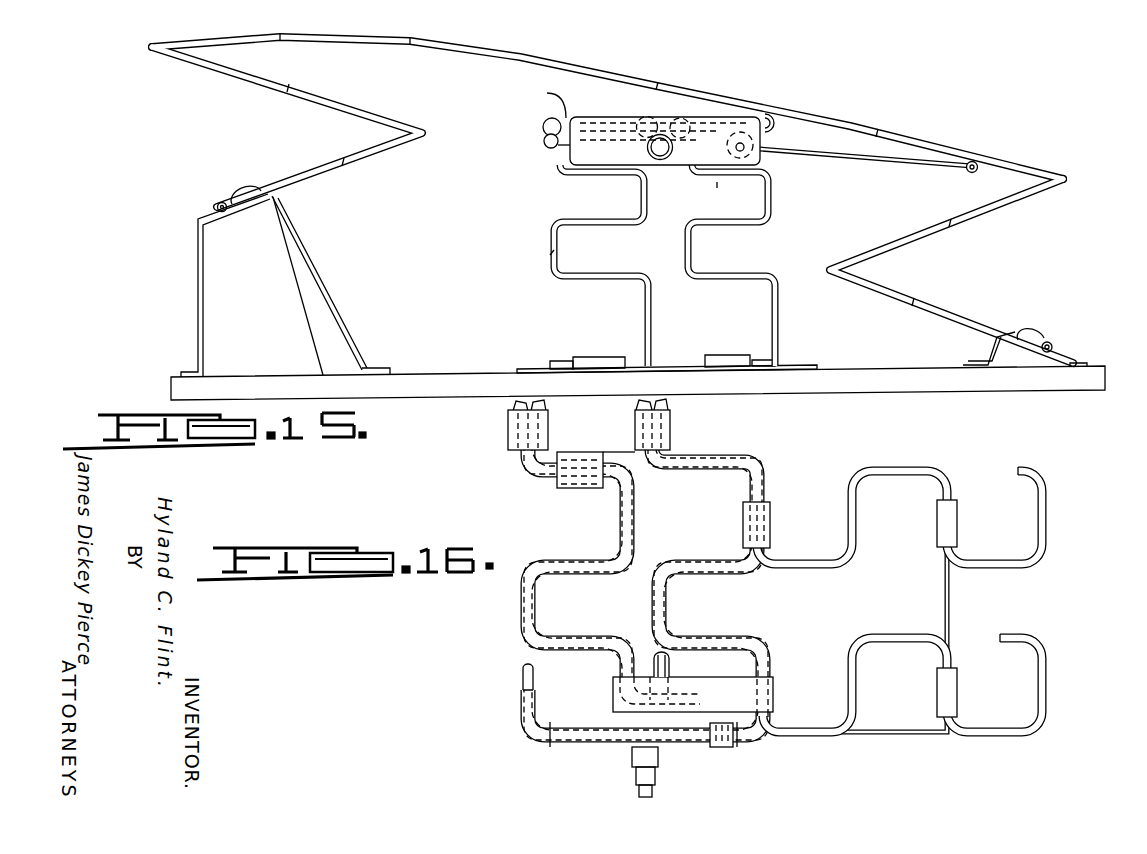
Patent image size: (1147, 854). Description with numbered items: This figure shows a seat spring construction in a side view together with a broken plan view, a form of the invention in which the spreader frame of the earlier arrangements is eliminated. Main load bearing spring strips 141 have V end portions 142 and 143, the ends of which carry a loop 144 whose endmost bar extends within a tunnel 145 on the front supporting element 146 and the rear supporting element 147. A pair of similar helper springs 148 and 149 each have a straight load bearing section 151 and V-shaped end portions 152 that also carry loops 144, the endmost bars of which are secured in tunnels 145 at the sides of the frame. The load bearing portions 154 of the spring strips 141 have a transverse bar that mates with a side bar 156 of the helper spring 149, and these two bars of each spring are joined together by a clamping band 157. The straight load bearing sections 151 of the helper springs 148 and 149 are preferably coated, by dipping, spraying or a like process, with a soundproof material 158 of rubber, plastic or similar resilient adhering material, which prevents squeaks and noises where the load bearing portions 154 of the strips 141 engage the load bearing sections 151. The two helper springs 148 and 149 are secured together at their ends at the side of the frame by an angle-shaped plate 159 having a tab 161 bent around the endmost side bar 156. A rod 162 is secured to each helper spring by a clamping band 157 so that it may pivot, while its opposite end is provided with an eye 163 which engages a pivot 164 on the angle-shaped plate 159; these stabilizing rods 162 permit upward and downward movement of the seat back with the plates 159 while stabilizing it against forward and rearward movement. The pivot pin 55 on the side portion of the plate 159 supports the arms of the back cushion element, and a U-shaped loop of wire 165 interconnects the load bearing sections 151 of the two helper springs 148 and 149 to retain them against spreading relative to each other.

In FIG. 15, the pivot pin 55 is at (650, 148).
In FIG. 16, the pivot pin 55 is at (656, 770).
In FIG. 15, the main load bearing spring strips 141 is at (612, 198).
In FIG. 16, the main load bearing spring strips 141 is at (842, 480).
In FIG. 15, the V end portion 142 is at (343, 164).
In FIG. 15, the V end portion 143 is at (967, 222).
In FIG. 15, the loop 144 is at (234, 194).
In FIG. 15, the tunnel 145 is at (218, 205).
In FIG. 15, the front supporting element 146 is at (322, 282).
In FIG. 15, the rear supporting element 147 is at (990, 347).
In FIG. 15, the helper spring 148 is at (536, 240).
In FIG. 15, the helper spring 149 is at (792, 225).
In FIG. 15, the straight load bearing section 151 is at (532, 100).
In FIG. 15, the V-shaped end portion 152 is at (551, 257).
In FIG. 15, the load bearing portion 154 is at (666, 89).
In FIG. 16, the side bar 156 is at (617, 532).
In FIG. 15, the clamping band 157 is at (543, 122).
In FIG. 16, the clamping band 157 is at (508, 430).
In FIG. 16, the soundproof material 158 is at (617, 518).
In FIG. 15, the angle-shaped plate 159 is at (575, 150).
In FIG. 16, the angle-shaped plate 159 is at (585, 749).
In FIG. 15, the tab 161 is at (655, 118).
In FIG. 16, the tab 161 is at (612, 683).
In FIG. 15, the rod 162 is at (910, 162).
In FIG. 16, the rod 162 is at (875, 733).
In FIG. 15, the eye 163 is at (718, 195).
In FIG. 16, the eye 163 is at (693, 694).
In FIG. 15, the pivot 164 is at (752, 151).
In FIG. 16, the pivot 164 is at (732, 749).
In FIG. 15, the U-shaped loop of wire 165 is at (543, 140).
In FIG. 16, the U-shaped loop of wire 165 is at (617, 452).